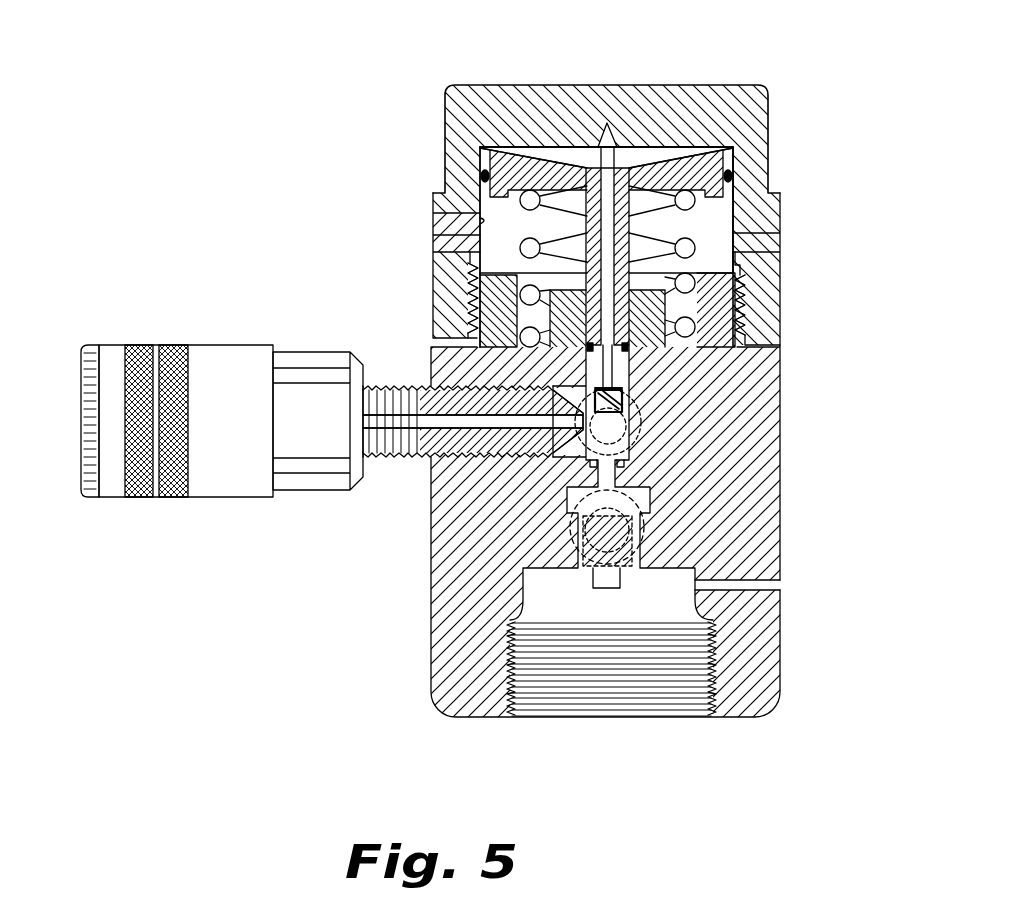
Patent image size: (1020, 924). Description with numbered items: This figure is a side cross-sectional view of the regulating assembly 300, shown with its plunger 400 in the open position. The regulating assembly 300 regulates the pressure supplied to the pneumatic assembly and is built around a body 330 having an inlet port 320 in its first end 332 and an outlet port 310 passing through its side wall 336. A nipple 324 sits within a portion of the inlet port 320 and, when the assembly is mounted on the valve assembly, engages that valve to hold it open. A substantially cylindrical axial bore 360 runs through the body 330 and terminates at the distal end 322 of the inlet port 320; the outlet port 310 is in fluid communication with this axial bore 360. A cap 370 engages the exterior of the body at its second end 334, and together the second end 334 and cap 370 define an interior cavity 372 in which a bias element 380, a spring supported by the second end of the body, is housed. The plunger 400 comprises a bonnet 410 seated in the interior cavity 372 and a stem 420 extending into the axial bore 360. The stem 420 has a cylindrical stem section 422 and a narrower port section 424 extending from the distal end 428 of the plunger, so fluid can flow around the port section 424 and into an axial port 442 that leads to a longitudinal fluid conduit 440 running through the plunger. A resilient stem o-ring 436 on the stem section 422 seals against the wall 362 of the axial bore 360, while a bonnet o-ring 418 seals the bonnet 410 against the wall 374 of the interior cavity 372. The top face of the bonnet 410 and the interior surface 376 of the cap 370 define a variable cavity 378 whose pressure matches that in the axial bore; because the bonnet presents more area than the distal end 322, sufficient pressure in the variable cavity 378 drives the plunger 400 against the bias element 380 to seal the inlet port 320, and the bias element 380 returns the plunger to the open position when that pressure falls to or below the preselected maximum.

The regulating assembly 300 is at (275, 64).
The outlet port 310 is at (442, 418).
The inlet port 320 is at (600, 512).
The distal end of the inlet port 322 is at (617, 462).
The nipple 324 is at (610, 580).
The body 330 is at (446, 572).
The first end of the body 332 is at (492, 720).
The second end of the body 334 is at (741, 312).
The side wall of the body 336 is at (781, 420).
The axial bore 360 is at (575, 455).
The wall of the axial bore 362 is at (603, 386).
The cap 370 is at (762, 92).
The interior cavity 372 is at (497, 258).
The wall of the interior cavity 374 is at (486, 222).
The interior surface of the cap 376 is at (562, 150).
The variable cavity 378 is at (640, 162).
The bias element 380 is at (745, 258).
The plunger 400 is at (520, 195).
The bonnet 410 is at (482, 178).
The bonnet o-ring 418 is at (484, 177).
The stem 420 is at (742, 302).
The stem section 422 is at (804, 295).
The port section 424 is at (623, 402).
The distal end of the plunger 428 is at (580, 430).
The lower spring 436 is at (590, 358).
The longitudinal fluid conduit 440 is at (607, 195).
The seat insert 442 is at (612, 393).